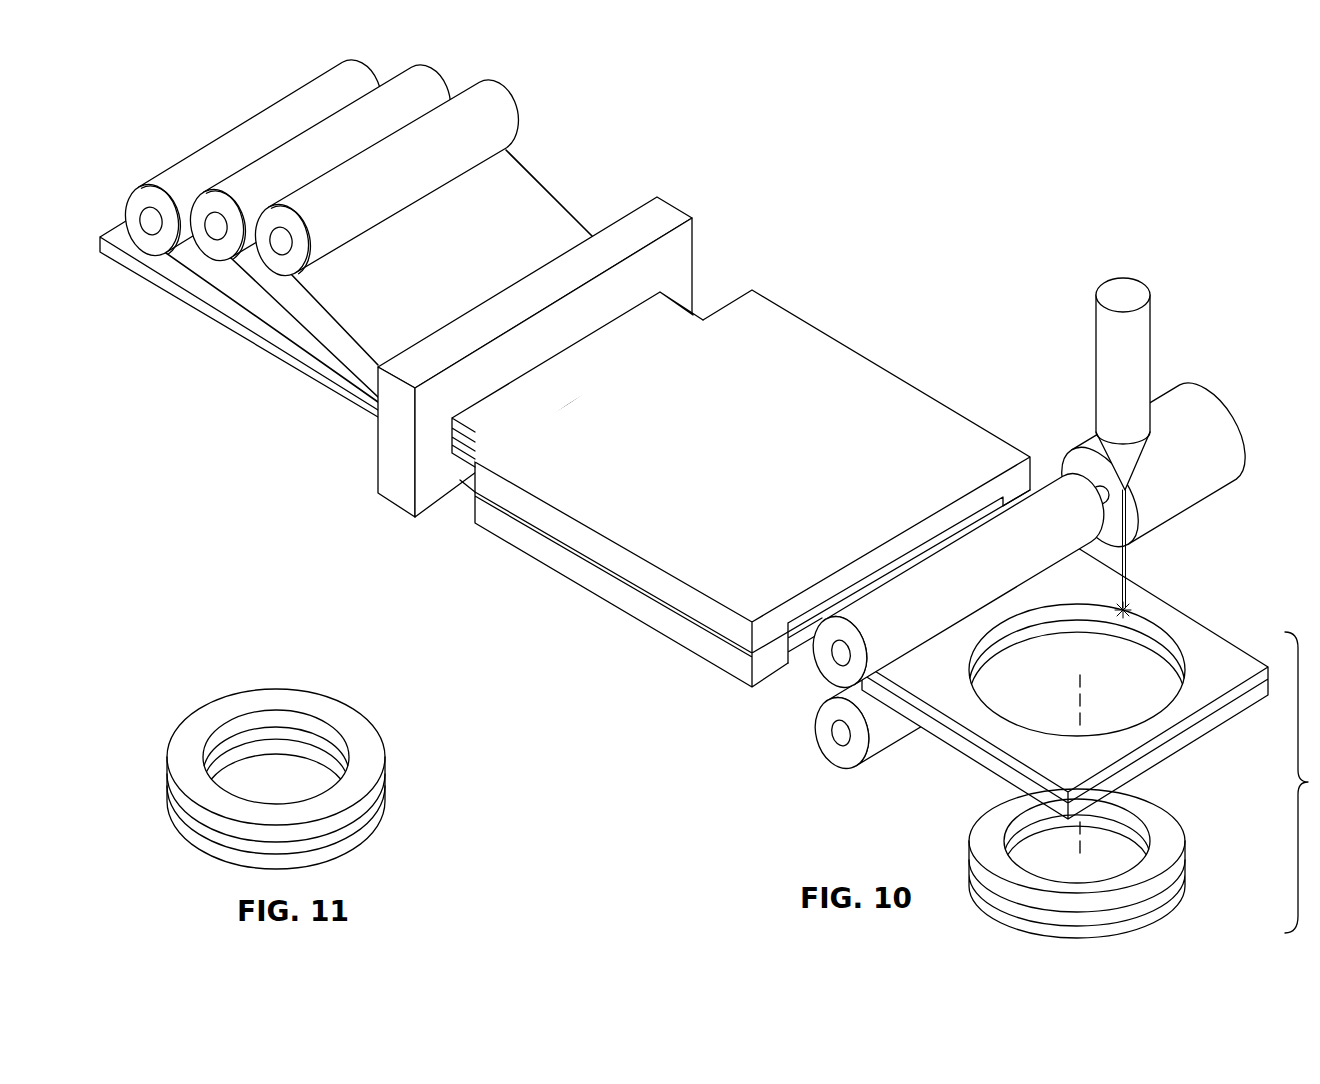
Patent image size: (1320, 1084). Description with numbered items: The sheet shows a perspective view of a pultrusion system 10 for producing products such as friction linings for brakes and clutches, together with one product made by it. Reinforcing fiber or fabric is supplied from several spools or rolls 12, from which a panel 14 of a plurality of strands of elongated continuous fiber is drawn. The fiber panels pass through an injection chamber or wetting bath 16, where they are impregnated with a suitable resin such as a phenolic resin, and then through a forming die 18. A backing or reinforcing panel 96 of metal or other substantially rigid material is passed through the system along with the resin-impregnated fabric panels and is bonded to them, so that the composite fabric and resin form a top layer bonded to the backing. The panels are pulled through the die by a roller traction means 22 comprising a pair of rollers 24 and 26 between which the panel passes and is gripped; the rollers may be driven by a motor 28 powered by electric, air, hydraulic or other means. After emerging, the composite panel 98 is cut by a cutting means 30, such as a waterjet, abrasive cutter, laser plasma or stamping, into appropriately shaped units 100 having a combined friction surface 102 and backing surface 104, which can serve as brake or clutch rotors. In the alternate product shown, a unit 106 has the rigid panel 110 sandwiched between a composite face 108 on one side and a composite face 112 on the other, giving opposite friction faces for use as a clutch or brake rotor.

In FIG. 10, the system 10 is at (975, 197).
In FIG. 10, the spools or rolls 12 is at (315, 127).
In FIG. 10, the panel 14 is at (518, 182).
In FIG. 10, the injection chamber or wetting bath 16 is at (385, 462).
In FIG. 10, the forming die 18 is at (768, 467).
In FIG. 10, the pulling or traction means 22 is at (1053, 424).
In FIG. 10, the roller 24 is at (975, 592).
In FIG. 10, the roller 26 is at (832, 753).
In FIG. 10, the motor 28 is at (1232, 450).
In FIG. 10, the cutting means 30 is at (1145, 323).
In FIG. 10, the backing or reinforcing panel 96 is at (205, 307).
In FIG. 10, the composite panel 98 is at (1193, 622).
In FIG. 10, the shaped units 100 is at (943, 819).
In FIG. 10, the friction surface 102 is at (1172, 825).
In FIG. 10, the backing surface 104 is at (1170, 898).
In FIG. 11, the unit 106 is at (191, 695).
In FIG. 11, the composite face 108 is at (367, 727).
In FIG. 11, the rigid panel 110 is at (215, 837).
In FIG. 11, the composite face 112 is at (360, 842).